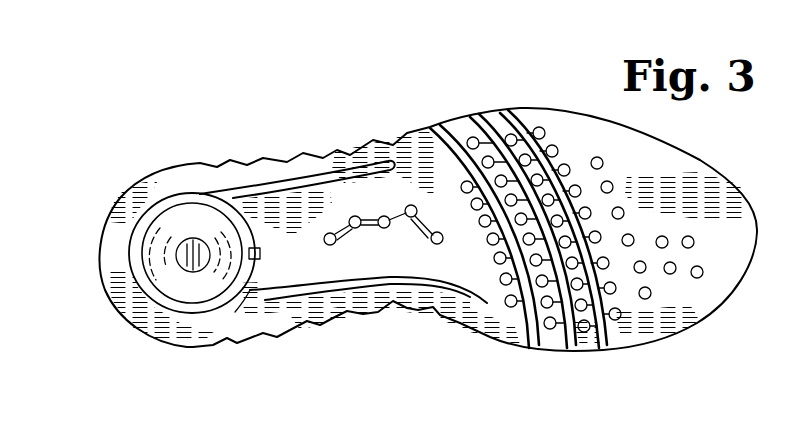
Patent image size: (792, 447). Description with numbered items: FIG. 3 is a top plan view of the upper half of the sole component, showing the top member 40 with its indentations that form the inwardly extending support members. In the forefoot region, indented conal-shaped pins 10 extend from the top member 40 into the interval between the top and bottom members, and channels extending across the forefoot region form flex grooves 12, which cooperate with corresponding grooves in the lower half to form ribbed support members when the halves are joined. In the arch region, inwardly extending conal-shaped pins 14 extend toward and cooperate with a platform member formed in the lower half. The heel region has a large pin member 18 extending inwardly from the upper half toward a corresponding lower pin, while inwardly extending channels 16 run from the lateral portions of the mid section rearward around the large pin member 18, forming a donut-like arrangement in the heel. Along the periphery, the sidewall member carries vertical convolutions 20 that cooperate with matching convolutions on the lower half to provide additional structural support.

The conal-shaped pins 10 is at (546, 126).
The flex grooves 12 is at (603, 355).
The conal-shaped pins 14 is at (352, 216).
The channels 16 is at (200, 194).
The large pin member 18 is at (192, 240).
The vertical convolutions 20 is at (347, 313).
The top member 40 is at (726, 172).